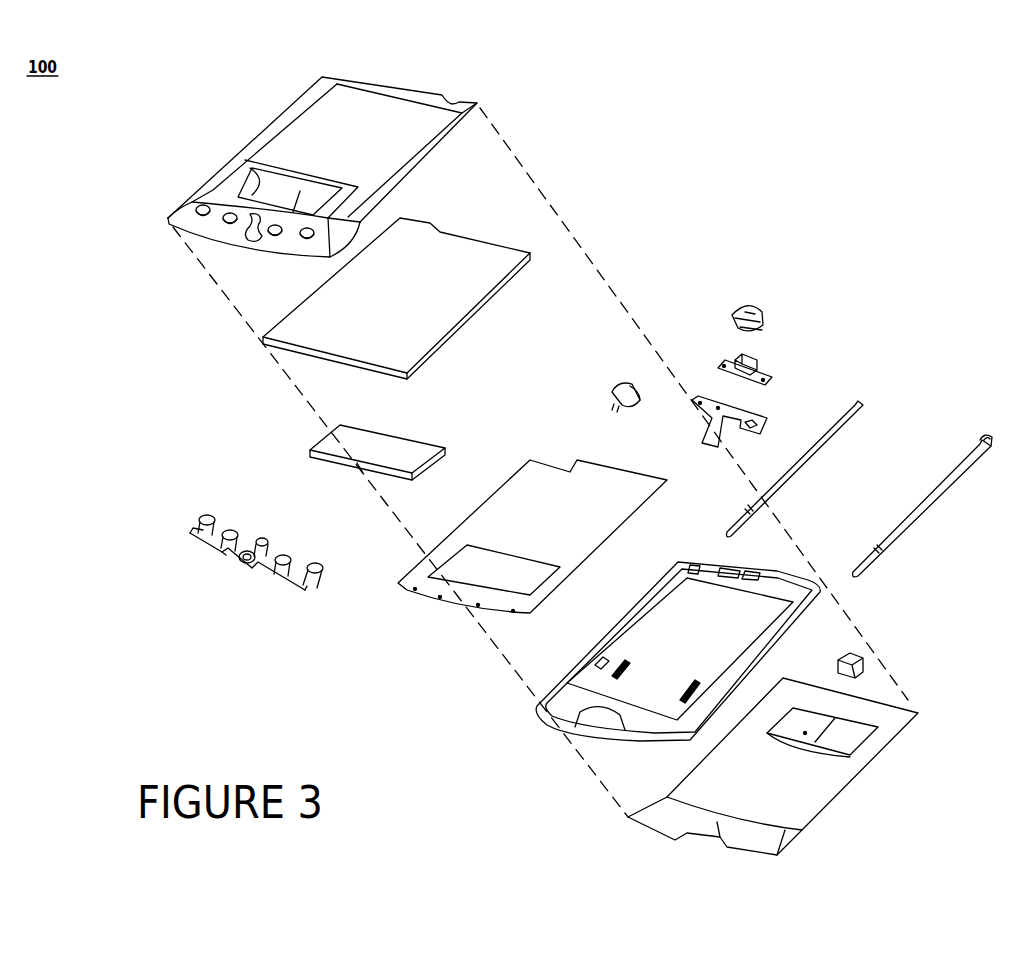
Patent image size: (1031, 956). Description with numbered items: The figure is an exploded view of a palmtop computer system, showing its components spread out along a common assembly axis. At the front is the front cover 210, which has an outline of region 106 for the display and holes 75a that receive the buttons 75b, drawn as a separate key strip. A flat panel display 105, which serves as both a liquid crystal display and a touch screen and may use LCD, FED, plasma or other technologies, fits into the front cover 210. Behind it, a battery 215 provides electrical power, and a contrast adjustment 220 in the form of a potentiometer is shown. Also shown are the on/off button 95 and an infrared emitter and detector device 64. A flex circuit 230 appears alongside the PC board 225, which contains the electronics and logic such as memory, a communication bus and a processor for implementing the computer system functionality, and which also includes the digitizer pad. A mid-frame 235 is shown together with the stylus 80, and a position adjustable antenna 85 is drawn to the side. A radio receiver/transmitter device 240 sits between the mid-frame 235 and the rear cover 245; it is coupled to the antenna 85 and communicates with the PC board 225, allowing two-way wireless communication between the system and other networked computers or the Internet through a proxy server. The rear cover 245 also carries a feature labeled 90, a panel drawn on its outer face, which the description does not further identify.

The front cover 210 is at (480, 105).
The region 106 is at (263, 188).
The holes 75a is at (177, 212).
The flat panel display 105 is at (505, 246).
The battery 215 is at (318, 438).
The buttons 75b is at (197, 514).
The PC board 225 is at (421, 556).
The contrast adjustment 220 is at (616, 383).
The on/off button 95 is at (747, 299).
The infrared emitter and detector device 64 is at (767, 369).
The flex circuit 230 is at (763, 408).
The position adjustable antenna 85 is at (862, 401).
The stylus 80 is at (964, 485).
The mid-frame 235 is at (813, 627).
The radio receiver/transmitter device 240 is at (868, 670).
The rear cover 245 is at (836, 809).
The battery door 90 is at (850, 732).